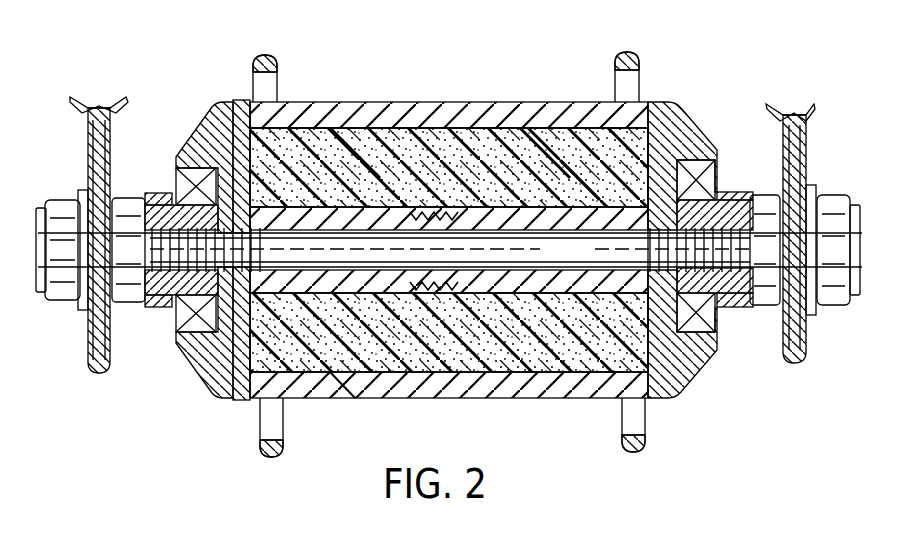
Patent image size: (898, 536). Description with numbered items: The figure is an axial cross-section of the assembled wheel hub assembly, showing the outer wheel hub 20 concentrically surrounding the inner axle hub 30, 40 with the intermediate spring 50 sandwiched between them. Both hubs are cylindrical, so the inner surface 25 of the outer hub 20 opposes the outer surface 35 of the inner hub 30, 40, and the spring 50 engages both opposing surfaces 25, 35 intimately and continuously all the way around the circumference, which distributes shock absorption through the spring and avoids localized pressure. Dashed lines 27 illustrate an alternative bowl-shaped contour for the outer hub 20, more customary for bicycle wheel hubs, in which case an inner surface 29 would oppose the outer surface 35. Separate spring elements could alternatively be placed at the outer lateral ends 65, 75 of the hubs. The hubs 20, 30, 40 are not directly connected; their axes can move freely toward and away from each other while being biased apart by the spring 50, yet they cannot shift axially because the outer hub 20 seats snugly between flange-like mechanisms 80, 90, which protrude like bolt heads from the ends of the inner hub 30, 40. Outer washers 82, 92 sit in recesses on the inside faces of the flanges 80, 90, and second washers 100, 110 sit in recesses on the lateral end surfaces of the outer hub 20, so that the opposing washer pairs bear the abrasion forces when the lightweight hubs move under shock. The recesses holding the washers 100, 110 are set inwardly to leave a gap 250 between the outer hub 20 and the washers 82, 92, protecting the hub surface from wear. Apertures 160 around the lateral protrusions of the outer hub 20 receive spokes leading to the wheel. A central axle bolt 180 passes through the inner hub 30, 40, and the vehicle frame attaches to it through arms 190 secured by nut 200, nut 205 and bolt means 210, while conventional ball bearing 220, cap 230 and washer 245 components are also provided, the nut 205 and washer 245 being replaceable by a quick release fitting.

The outer wheel hub 20 is at (467, 114).
The inner surface 25 is at (418, 137).
The dashed lines 27 is at (485, 338).
The inner surface 29 is at (385, 330).
The inner axle hub 30 is at (314, 198).
The outer surface 35 is at (582, 196).
The inner axle hub 40 is at (537, 200).
The intermediate spring 50 is at (375, 143).
The outer lateral end 65 is at (213, 373).
The outer lateral end 75 is at (693, 377).
The flange-like mechanism 80 is at (200, 140).
The outer washer 82 is at (233, 103).
The flange-like mechanism 90 is at (688, 158).
The outer washer 92 is at (658, 100).
The second washer 100 is at (247, 108).
The second washer 110 is at (643, 102).
The apertures 160 is at (275, 97).
The central axle bolt 180 is at (450, 250).
The arms 190 is at (105, 97).
The nut 200 is at (128, 212).
The nut 205 is at (62, 212).
The bolt means 210 is at (738, 308).
The ball bearing 220 is at (185, 347).
The cap 230 is at (182, 317).
The washer 245 is at (83, 317).
The gap 250 is at (240, 415).